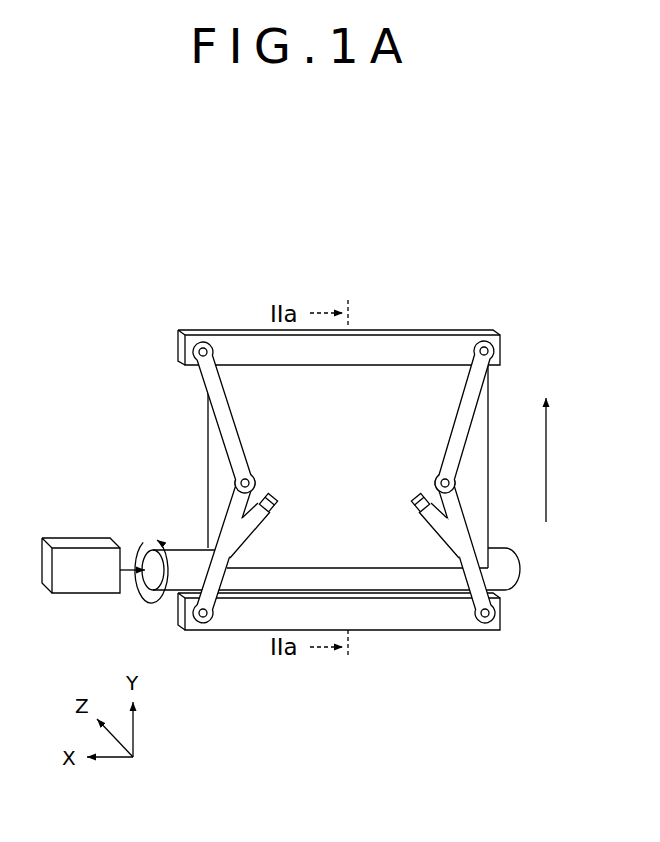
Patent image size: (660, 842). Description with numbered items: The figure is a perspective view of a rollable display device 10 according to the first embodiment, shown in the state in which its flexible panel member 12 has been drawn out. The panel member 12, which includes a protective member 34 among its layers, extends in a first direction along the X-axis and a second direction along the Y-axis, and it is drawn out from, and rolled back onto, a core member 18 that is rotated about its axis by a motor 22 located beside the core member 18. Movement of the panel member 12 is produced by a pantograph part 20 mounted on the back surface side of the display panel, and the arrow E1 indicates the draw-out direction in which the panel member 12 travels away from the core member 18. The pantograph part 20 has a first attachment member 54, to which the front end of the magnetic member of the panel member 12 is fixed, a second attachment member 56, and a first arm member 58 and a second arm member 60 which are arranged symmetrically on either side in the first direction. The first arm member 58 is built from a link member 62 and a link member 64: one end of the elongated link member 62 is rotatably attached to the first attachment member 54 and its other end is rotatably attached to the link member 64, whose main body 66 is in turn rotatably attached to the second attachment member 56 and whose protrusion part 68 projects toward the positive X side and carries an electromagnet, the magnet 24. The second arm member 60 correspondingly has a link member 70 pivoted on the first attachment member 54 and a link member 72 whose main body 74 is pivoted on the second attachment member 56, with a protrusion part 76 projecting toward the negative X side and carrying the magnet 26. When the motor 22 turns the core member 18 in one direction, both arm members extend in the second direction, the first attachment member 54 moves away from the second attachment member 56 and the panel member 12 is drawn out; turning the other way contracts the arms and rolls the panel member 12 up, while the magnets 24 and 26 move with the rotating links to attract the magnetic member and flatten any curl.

The display device 10 is at (128, 278).
The panel member 12 is at (315, 466).
The core member 18 is at (511, 568).
The pantograph part 20 is at (360, 464).
The motor 22 is at (87, 578).
The magnet 24 is at (409, 504).
The magnet 26 is at (276, 507).
The protective member 34 is at (220, 477).
The first attachment member 54 is at (395, 347).
The second attachment member 56 is at (398, 621).
The first arm member 58 is at (489, 417).
The second arm member 60 is at (204, 417).
The link member 62 is at (467, 426).
The link member 64 is at (449, 548).
The main body 66 is at (449, 548).
The protrusion part 68 is at (435, 535).
The link member 70 is at (223, 418).
The link member 72 is at (237, 548).
The main body 74 is at (245, 548).
The protrusion part 76 is at (253, 537).
The draw-out direction arrow E1 is at (548, 465).